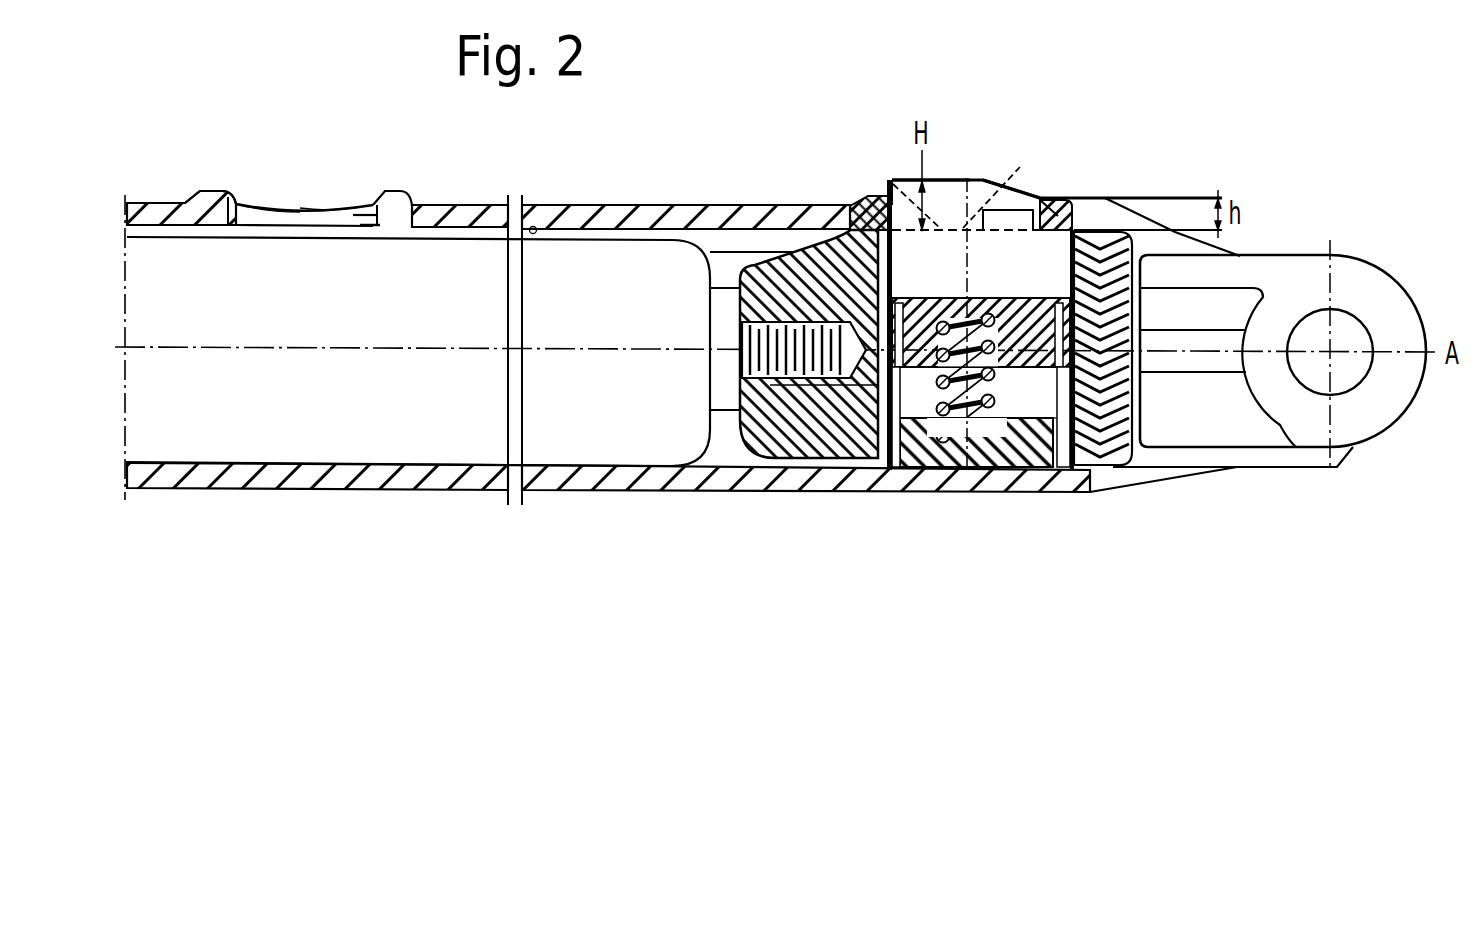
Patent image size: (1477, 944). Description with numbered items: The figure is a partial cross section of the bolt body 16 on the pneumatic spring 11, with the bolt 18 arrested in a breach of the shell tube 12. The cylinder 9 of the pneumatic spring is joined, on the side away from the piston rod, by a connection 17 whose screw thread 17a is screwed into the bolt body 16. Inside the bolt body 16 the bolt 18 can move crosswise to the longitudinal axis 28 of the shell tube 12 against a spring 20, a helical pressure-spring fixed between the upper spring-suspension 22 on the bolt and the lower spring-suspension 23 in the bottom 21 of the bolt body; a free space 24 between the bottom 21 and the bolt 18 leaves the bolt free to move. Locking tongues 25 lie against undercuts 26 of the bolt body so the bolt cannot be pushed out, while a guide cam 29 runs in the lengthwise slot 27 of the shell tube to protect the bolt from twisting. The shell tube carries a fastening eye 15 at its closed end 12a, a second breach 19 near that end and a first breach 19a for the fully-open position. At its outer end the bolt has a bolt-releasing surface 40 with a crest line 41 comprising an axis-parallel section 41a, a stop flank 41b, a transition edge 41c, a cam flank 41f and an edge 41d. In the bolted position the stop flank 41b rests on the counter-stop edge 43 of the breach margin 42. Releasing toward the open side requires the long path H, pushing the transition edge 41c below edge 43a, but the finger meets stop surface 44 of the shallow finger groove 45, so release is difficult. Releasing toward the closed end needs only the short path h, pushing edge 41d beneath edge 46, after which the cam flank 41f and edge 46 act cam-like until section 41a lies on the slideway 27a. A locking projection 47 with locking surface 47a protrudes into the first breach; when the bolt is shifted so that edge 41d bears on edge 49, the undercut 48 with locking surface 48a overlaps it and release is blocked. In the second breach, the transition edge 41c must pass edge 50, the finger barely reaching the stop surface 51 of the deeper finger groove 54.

The cylinder 9 is at (598, 440).
The pneumatic spring 11 is at (555, 407).
The shell tube 12 is at (670, 213).
The closed end 12a is at (1118, 397).
The fastening eye 15 is at (1390, 383).
The bolt body 16 is at (807, 280).
The connection 17 is at (718, 400).
The screw thread 17a is at (772, 420).
The bolt 18 is at (970, 178).
The second breach 19 is at (880, 187).
The first breach 19a is at (267, 200).
The spring 20 is at (930, 440).
The bottom 21 is at (1040, 452).
The upper spring-suspension 22 is at (997, 303).
The lower spring-suspension 23 is at (983, 445).
The free space 24 is at (1100, 465).
The locking tongues 25 is at (1137, 320).
The undercuts 26 is at (850, 400).
The lengthwise slot 27 is at (607, 233).
The slideway 27a is at (530, 223).
The longitudinal axis 28 is at (540, 343).
The guide cam 29 is at (1112, 208).
The bolt-releasing surface 40 is at (946, 174).
The crest line 41 is at (995, 179).
The section parallel to the axis 41a is at (980, 178).
The stop flank 41b is at (898, 177).
The transition edge 41c is at (892, 177).
The edge 41d is at (1060, 195).
The cam flank 41f is at (1047, 197).
The breach margin 42 is at (387, 200).
The counter-stop edge 43 is at (238, 197).
The edge 43a is at (227, 226).
The stop surface 44 is at (287, 205).
The finger groove 45 is at (303, 203).
The edge 46 is at (373, 225).
The locking projection 47 is at (390, 225).
The locking surface 47a is at (378, 215).
The undercut 48 is at (1025, 232).
The locking surface 48a is at (1073, 195).
The edge 49 is at (400, 200).
The edge 50 is at (885, 195).
The stop surface 51 is at (993, 182).
The finger groove 54 is at (940, 213).